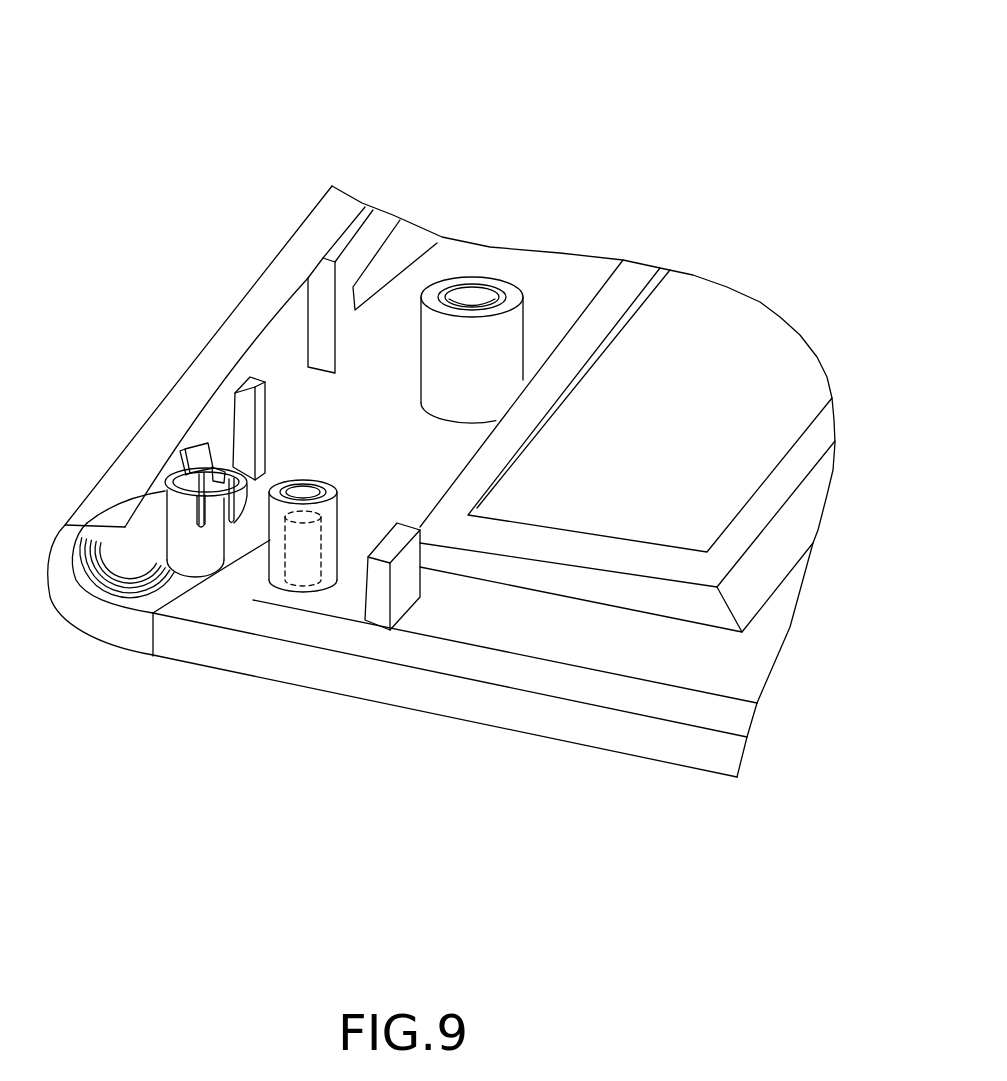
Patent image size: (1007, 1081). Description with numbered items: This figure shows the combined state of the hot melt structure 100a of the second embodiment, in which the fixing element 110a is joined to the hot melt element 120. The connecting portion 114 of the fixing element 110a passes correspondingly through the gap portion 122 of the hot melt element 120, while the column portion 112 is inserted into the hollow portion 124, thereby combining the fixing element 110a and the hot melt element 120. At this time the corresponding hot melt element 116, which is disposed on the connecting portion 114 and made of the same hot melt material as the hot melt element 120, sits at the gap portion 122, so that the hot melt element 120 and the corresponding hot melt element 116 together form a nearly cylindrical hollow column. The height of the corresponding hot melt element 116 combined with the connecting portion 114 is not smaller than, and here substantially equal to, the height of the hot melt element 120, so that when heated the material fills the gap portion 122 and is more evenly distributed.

The hot melt structure 100a is at (785, 150).
The fixing element 110a is at (191, 623).
The column portion 112 is at (307, 580).
The connecting portion 114 is at (284, 532).
The corresponding hot melt element 116 is at (252, 515).
The hot melt element 120 is at (216, 400).
The gap portion 122 is at (295, 480).
The hollow portion 124 is at (308, 497).